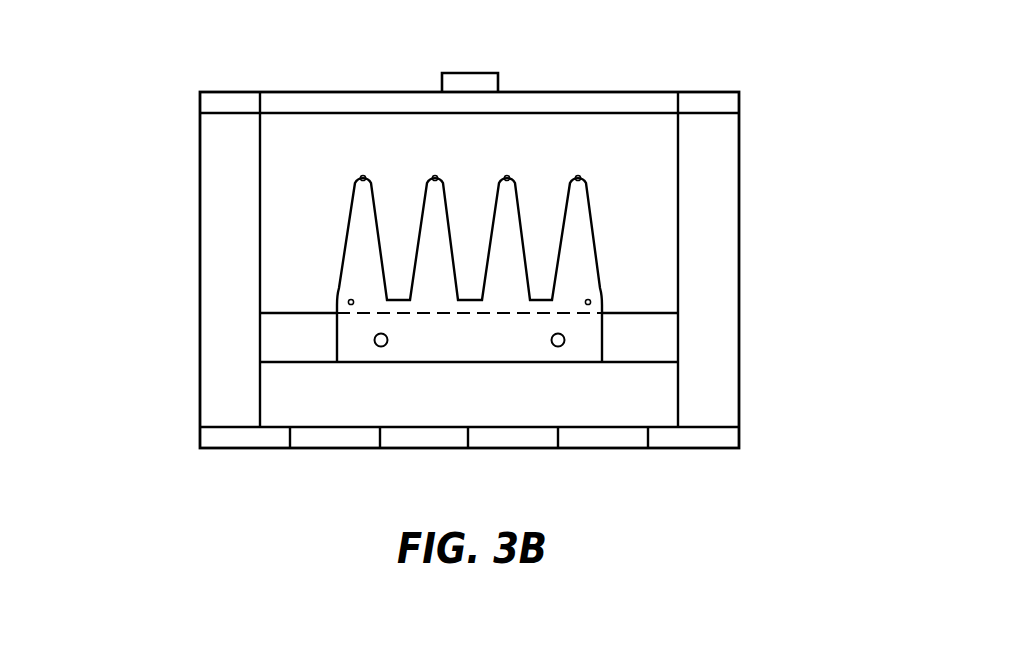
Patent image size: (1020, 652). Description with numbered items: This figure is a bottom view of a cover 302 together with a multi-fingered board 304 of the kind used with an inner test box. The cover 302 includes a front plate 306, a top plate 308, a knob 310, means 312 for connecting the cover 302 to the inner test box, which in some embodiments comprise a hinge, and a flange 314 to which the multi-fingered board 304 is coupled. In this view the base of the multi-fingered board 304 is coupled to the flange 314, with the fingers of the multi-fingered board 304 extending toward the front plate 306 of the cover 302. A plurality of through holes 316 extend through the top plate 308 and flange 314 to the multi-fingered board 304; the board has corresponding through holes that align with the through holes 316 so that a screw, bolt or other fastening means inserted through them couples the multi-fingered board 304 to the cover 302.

The cover 302 is at (200, 270).
The multi-fingered board 304 is at (470, 300).
The front plate 306 is at (722, 103).
The top plate 308 is at (713, 270).
The knob 310 is at (470, 73).
The means for connecting the cover to an inner test box 312 is at (200, 437).
The flange 314 is at (652, 336).
The through holes 316 is at (558, 347).